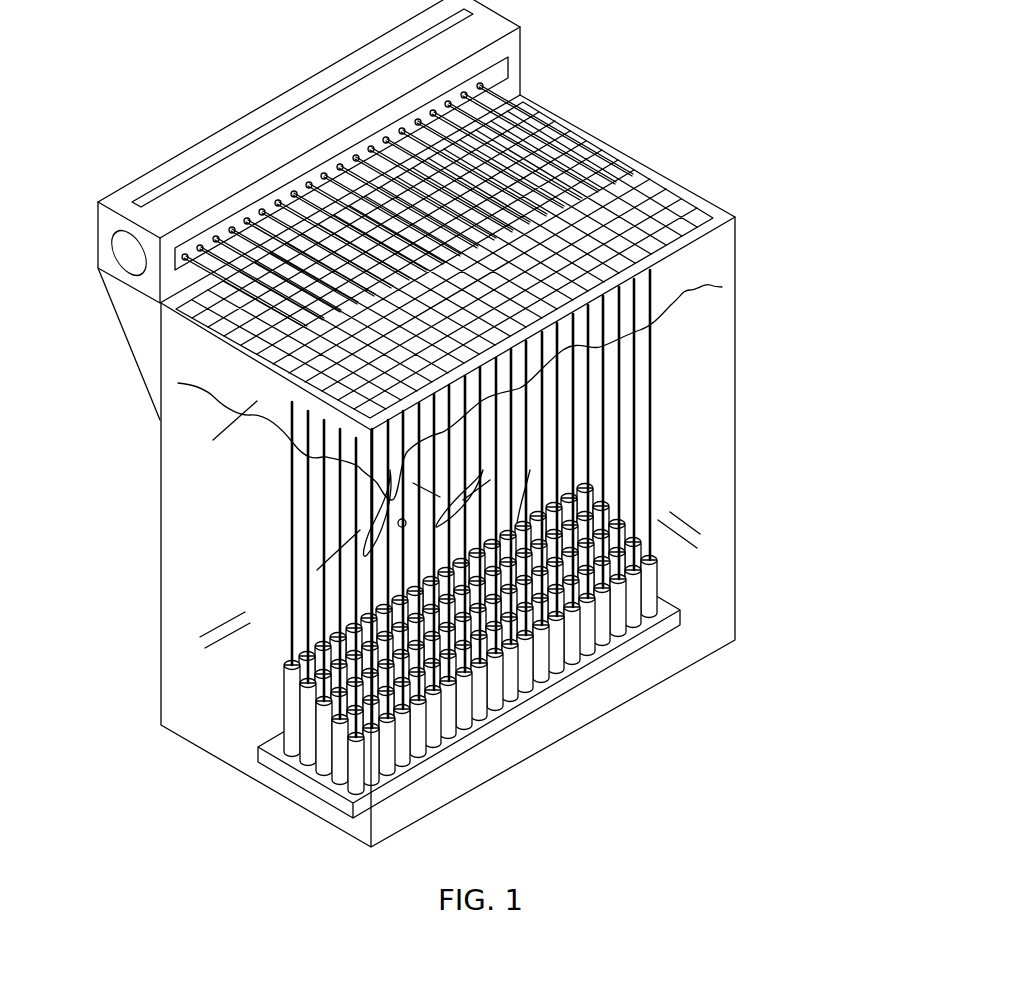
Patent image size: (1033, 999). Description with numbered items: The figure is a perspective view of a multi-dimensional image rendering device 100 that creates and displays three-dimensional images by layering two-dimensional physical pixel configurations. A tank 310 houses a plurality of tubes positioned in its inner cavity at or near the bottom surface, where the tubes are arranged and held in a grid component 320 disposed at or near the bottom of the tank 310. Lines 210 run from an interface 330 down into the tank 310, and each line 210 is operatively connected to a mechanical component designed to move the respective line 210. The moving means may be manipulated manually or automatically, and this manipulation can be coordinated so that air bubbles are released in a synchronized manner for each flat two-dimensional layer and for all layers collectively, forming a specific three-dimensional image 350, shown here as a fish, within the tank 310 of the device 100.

The multi-dimensional image rendering device 100 is at (608, 808).
The lines 210 is at (565, 147).
The tank 310 is at (160, 472).
The grid component 320 is at (292, 722).
The interface 330 is at (160, 167).
The three-dimensional image 350 is at (563, 423).